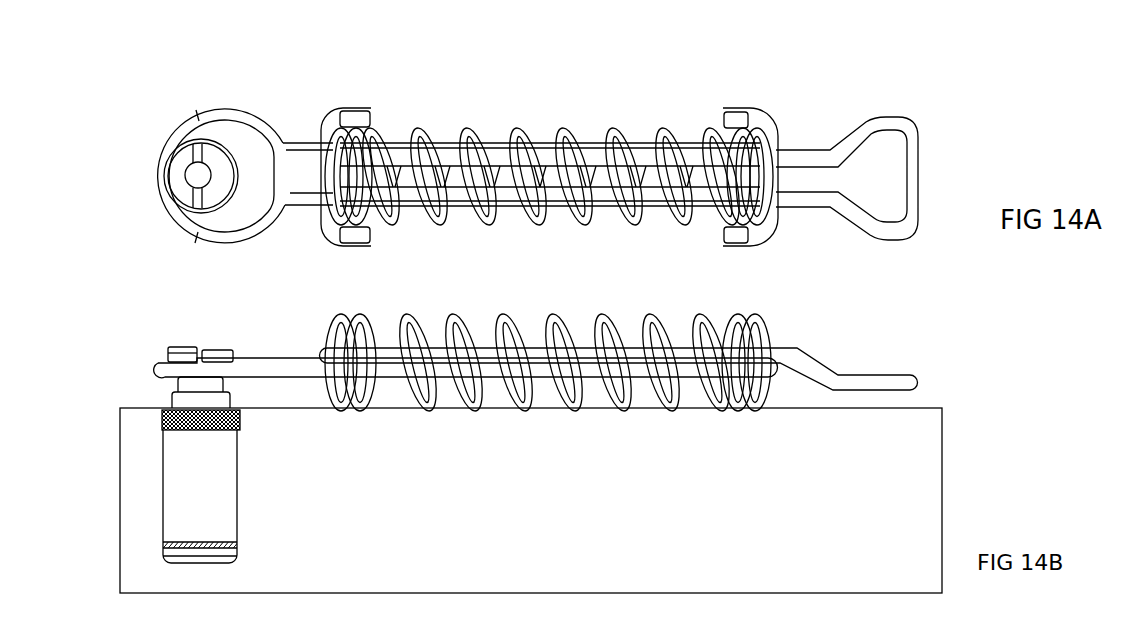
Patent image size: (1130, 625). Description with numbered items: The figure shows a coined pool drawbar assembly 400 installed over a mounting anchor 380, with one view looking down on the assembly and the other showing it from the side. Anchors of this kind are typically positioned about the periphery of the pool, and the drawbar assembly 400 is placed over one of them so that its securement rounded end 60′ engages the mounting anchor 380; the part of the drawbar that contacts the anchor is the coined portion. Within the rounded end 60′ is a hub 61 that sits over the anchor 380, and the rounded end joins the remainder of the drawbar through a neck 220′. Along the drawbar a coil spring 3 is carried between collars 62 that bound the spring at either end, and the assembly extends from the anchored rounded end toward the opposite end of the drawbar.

In FIG. 14A, the coined pool drawbar assembly 400 is at (258, 85).
In FIG. 14A, the securement rounded end 60′ is at (195, 256).
In FIG. 14A, the hub / pivot bushing 61 is at (180, 209).
In FIG. 14B, the hub / pivot bushing 61 is at (162, 362).
In FIG. 14A, the mounting anchor 380 is at (263, 180).
In FIG. 14B, the mounting anchor 380 is at (112, 399).
In FIG. 14A, the neck of rod 220′ is at (293, 208).
In FIG. 14A, the collars / stops 62 is at (360, 122).
In FIG. 14A, the coil spring 3 is at (549, 176).
In FIG. 14B, the coil spring 3 is at (653, 318).